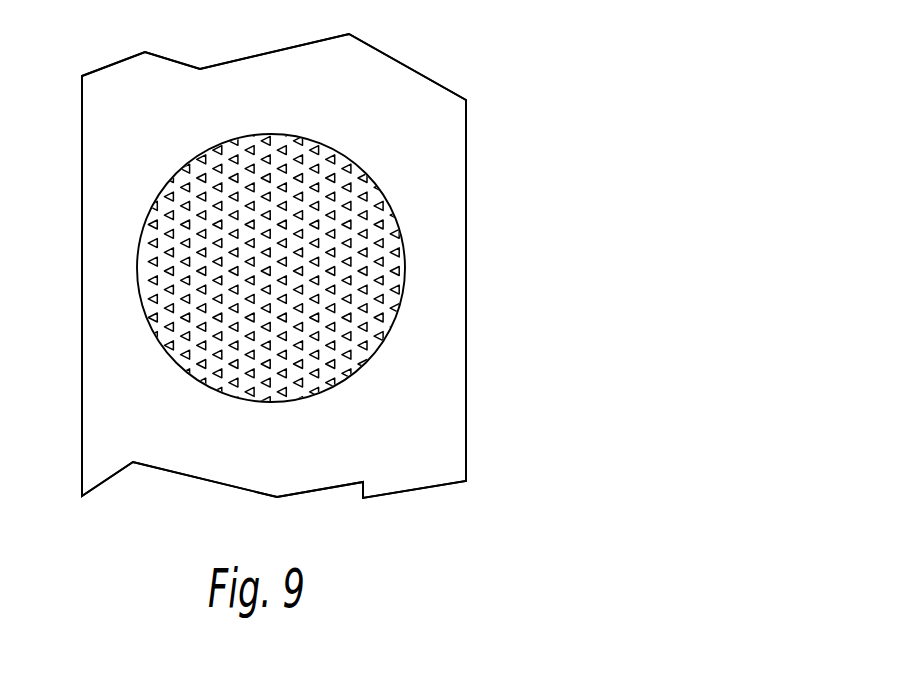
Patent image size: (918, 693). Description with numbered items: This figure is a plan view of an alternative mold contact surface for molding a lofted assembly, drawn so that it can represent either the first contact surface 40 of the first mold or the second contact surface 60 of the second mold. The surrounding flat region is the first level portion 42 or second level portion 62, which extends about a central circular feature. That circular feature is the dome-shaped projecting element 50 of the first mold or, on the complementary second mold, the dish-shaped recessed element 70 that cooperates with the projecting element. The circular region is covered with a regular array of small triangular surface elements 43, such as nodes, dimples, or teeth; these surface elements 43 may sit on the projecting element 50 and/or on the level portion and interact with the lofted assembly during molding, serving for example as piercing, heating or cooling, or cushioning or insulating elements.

The first contact surface 40 is at (330, 266).
The second contact surface 60 is at (413, 415).
The first level portion 42 is at (368, 249).
The second level portion 62 is at (503, 52).
The projecting element 50 is at (358, 266).
The recessed element 70 is at (382, 193).
The surface elements 43 is at (333, 327).